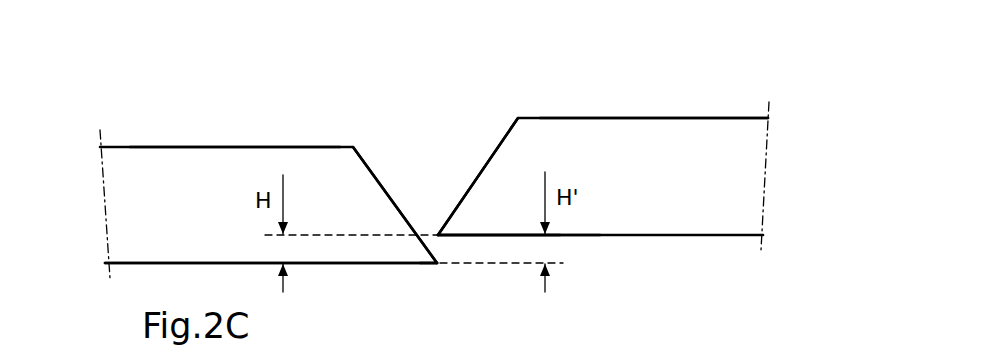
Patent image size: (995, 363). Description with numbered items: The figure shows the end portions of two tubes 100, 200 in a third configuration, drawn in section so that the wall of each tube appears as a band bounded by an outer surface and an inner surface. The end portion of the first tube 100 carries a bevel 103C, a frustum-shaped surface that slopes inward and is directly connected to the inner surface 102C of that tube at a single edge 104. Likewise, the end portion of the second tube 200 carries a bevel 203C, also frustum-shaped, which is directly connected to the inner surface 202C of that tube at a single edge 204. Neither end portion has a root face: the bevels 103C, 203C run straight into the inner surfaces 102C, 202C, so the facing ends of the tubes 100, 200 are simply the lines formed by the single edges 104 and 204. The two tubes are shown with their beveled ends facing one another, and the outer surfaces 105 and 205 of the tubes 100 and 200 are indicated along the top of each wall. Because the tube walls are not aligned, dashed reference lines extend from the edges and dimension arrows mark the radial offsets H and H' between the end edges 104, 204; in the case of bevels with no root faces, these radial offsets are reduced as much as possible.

The tube 100 is at (158, 163).
The upper surface of first portion 105 is at (245, 144).
The bevel 103C is at (373, 173).
The inner surface 102C is at (337, 264).
The single edge 104 is at (445, 263).
The single edge 204 is at (440, 235).
The bevel 203C is at (486, 152).
The inner surface 202C is at (493, 236).
The upper surface of second portion 205 is at (639, 118).
The tube 200 is at (703, 137).